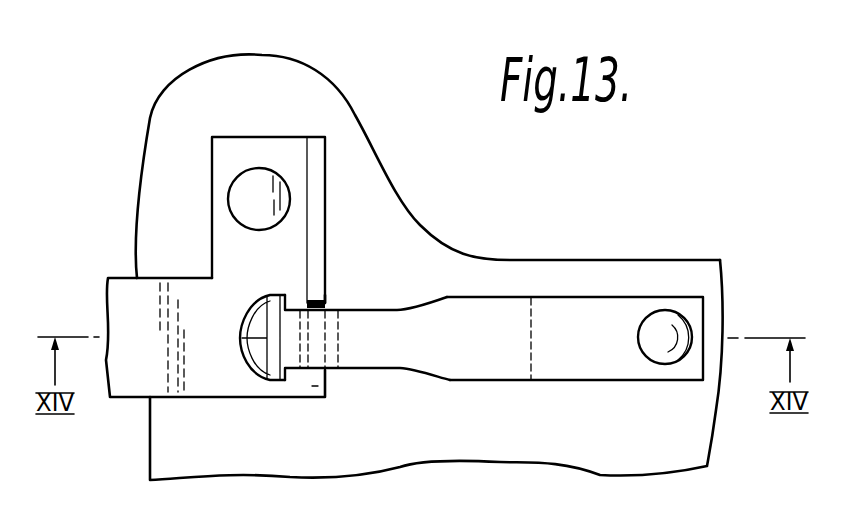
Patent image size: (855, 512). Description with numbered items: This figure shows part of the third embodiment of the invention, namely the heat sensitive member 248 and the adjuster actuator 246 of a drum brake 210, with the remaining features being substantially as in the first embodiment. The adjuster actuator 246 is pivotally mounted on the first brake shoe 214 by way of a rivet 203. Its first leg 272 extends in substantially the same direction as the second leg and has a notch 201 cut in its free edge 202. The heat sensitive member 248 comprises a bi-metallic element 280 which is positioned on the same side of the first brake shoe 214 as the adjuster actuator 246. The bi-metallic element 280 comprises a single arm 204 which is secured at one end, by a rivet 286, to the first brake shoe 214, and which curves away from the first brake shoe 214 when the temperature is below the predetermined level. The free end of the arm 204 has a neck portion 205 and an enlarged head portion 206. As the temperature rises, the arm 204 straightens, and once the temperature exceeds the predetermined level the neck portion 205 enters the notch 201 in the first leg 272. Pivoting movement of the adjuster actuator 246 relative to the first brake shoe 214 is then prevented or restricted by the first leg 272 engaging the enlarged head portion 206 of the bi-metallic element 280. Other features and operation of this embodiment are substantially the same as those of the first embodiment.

The notch 201 is at (332, 371).
The free edge 202 is at (316, 180).
The rivet 203 is at (243, 198).
The single arm 204 is at (551, 316).
The neck portion 205 is at (340, 314).
The enlarged head portion 206 is at (248, 327).
The drum brake 210 is at (165, 86).
The first brake shoe 214 is at (571, 444).
The adjuster actuator 246 is at (238, 404).
The heat sensitive member 248 is at (606, 292).
The first leg 272 is at (315, 388).
The bi-metallic element 280 is at (542, 395).
The rivet 286 is at (647, 396).